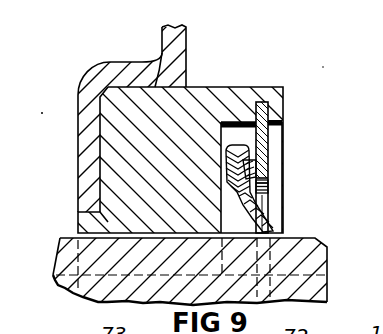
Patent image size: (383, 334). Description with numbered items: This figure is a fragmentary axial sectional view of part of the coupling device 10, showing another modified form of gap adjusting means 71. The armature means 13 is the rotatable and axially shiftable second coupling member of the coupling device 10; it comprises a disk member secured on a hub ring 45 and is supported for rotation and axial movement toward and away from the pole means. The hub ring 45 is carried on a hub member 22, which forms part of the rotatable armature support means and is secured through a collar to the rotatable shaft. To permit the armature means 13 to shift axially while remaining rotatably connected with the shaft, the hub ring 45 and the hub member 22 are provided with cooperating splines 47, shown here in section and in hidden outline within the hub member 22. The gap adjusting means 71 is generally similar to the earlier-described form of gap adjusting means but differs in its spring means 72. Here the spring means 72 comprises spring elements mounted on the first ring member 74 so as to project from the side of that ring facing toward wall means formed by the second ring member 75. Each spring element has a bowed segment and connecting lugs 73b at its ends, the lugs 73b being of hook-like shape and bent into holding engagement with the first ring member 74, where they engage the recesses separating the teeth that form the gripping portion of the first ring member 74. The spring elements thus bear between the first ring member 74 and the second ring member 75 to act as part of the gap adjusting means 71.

The armature means 13 is at (190, 51).
The hub ring 45 is at (204, 87).
The connecting lugs 73b is at (226, 181).
The spring means 72 is at (241, 150).
The gap adjusting means 71 is at (273, 152).
The second ring member 75 is at (268, 168).
The first ring member 74 is at (227, 146).
The coupling device 10 is at (227, 128).
The hub member 22 is at (300, 245).
The splines 47 is at (72, 291).